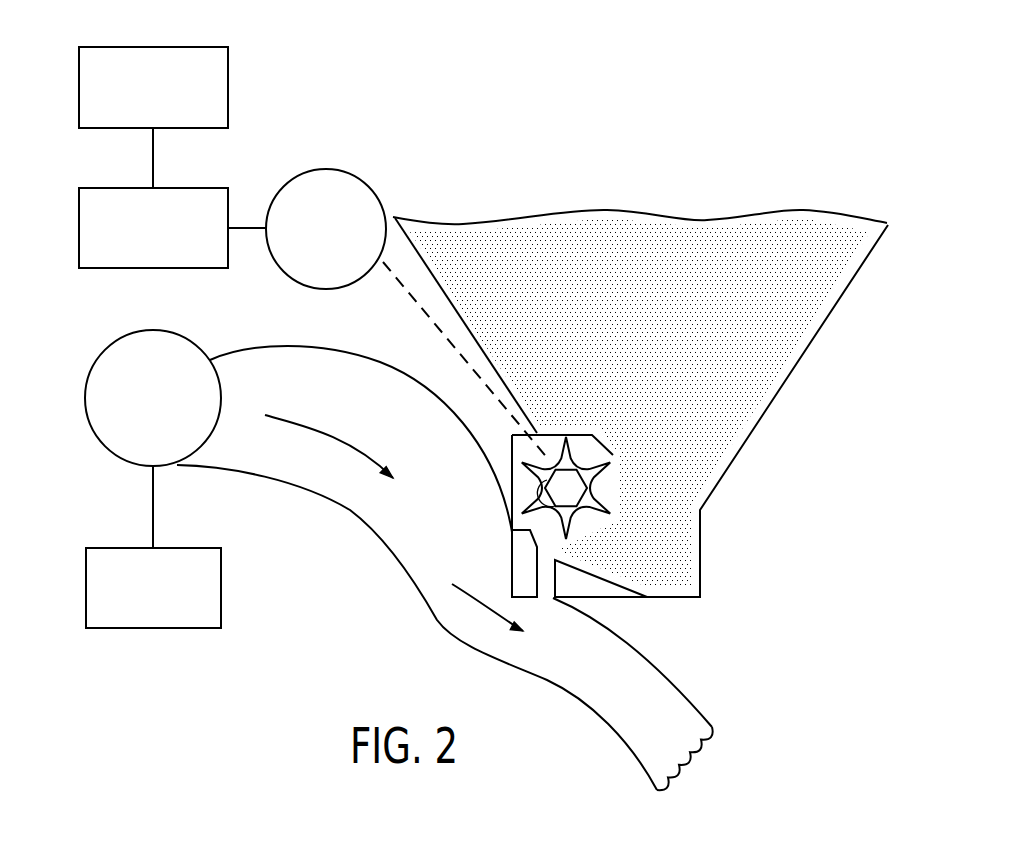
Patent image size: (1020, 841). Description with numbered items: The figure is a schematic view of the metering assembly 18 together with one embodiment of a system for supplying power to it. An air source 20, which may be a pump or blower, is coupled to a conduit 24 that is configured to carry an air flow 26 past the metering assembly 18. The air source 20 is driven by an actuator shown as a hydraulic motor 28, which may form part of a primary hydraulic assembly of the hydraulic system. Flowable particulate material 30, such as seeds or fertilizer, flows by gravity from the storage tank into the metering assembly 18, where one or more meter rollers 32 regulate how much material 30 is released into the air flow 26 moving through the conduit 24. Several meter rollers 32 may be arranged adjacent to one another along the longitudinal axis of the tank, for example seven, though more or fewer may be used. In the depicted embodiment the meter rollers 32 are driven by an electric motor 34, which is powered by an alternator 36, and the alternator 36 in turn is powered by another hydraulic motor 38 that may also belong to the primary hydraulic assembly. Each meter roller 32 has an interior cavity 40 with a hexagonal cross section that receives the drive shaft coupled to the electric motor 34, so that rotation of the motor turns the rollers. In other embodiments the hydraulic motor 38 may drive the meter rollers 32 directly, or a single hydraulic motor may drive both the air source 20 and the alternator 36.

The metering assembly 18 is at (500, 427).
The air source 20 is at (84, 398).
The conduit 24 is at (377, 540).
The air flow 26 is at (330, 432).
The hydraulic motor 28 is at (155, 628).
The flowable particulate material 30 is at (807, 322).
The meter roller 32 is at (613, 492).
The electric motor 34 is at (322, 171).
The alternator 36 is at (112, 188).
The hydraulic motor 38 is at (112, 47).
The interior cavity 40 is at (555, 505).